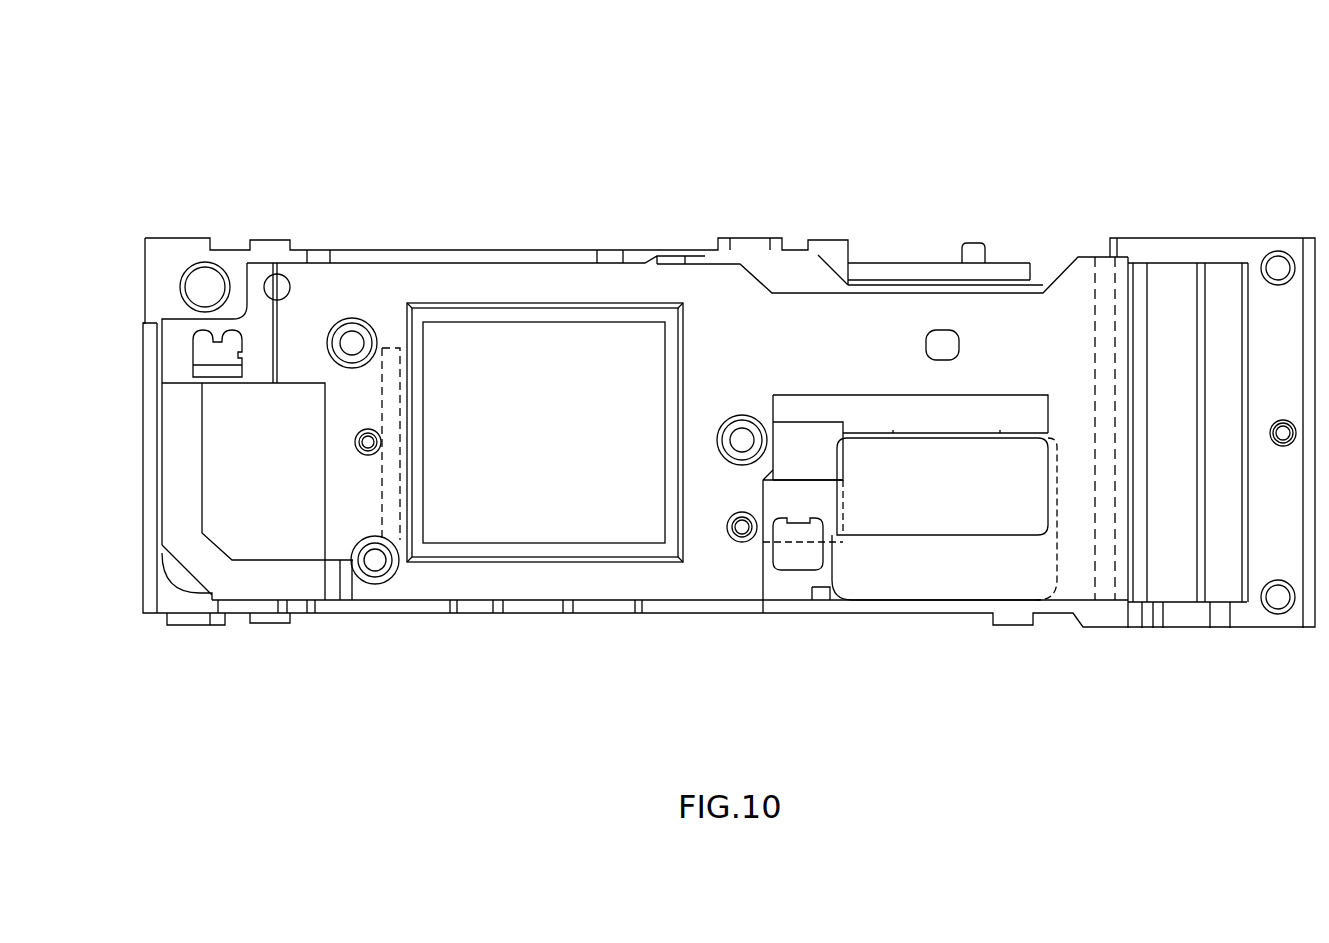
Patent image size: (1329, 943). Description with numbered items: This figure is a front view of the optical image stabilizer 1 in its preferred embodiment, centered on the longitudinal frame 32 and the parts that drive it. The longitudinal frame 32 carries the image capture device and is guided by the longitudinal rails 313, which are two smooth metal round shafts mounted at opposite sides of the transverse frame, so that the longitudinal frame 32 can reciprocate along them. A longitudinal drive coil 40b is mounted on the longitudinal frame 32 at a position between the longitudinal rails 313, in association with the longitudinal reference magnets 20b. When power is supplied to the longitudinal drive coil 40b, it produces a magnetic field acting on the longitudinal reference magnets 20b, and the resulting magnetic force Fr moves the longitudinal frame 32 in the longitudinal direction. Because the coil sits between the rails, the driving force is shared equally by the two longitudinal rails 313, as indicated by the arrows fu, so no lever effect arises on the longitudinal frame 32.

The optical image stabilizer 1 is at (729, 394).
The longitudinal frame 32 is at (593, 582).
The longitudinal reference magnets 20b is at (743, 600).
The longitudinal drive coil 40b is at (842, 582).
The longitudinal rails 313 is at (1115, 580).
The magnetic force Fr is at (947, 512).
The distributed driving force fu is at (417, 522).